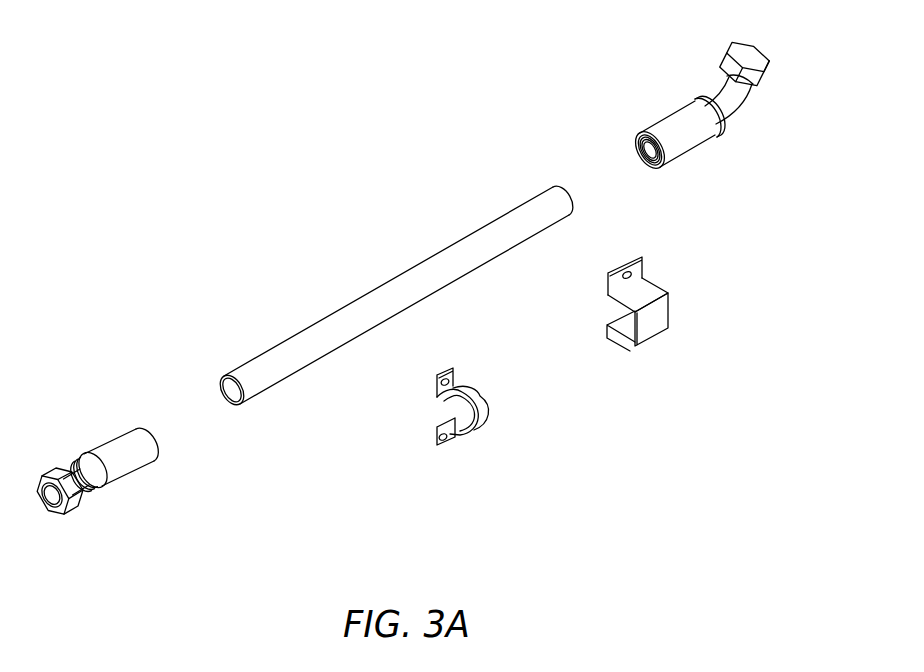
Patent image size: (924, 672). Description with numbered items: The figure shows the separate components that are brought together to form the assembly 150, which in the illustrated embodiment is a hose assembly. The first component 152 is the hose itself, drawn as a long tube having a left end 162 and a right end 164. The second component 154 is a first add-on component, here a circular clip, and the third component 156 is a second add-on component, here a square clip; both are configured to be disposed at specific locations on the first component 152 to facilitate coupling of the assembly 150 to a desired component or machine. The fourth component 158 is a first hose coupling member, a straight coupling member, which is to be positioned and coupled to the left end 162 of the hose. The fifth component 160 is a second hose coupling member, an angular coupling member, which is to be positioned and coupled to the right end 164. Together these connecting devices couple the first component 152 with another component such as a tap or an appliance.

The assembly 150 is at (250, 155).
The first component 152 is at (273, 372).
The second component 154 is at (470, 418).
The third component 156 is at (650, 323).
The fourth component 158 is at (127, 462).
The fifth component 160 is at (688, 140).
The left end 162 is at (219, 414).
The right end 164 is at (573, 178).